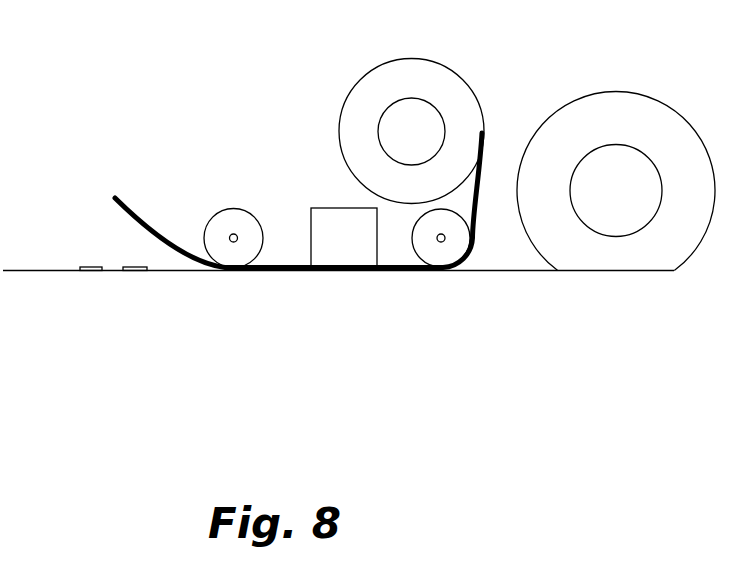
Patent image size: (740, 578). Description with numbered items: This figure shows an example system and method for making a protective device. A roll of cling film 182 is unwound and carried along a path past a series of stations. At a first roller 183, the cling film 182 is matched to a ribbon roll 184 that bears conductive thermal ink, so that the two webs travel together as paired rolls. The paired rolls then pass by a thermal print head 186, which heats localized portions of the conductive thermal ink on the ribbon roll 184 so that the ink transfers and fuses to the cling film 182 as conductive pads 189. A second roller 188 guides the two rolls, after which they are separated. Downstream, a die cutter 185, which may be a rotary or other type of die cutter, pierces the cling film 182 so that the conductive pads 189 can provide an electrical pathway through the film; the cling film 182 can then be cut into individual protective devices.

The roll of cling film 182 is at (632, 91).
The first roller 183 is at (443, 250).
The ribbon roll 184 is at (462, 77).
The die cutter 185 is at (133, 277).
The thermal print head 186 is at (325, 204).
The second roller 188 is at (220, 222).
The conductive pads 189 is at (145, 267).